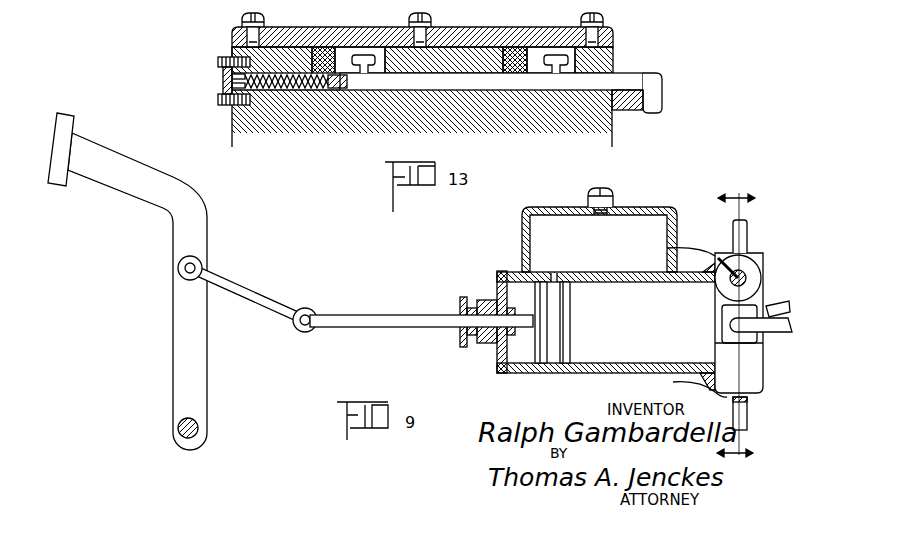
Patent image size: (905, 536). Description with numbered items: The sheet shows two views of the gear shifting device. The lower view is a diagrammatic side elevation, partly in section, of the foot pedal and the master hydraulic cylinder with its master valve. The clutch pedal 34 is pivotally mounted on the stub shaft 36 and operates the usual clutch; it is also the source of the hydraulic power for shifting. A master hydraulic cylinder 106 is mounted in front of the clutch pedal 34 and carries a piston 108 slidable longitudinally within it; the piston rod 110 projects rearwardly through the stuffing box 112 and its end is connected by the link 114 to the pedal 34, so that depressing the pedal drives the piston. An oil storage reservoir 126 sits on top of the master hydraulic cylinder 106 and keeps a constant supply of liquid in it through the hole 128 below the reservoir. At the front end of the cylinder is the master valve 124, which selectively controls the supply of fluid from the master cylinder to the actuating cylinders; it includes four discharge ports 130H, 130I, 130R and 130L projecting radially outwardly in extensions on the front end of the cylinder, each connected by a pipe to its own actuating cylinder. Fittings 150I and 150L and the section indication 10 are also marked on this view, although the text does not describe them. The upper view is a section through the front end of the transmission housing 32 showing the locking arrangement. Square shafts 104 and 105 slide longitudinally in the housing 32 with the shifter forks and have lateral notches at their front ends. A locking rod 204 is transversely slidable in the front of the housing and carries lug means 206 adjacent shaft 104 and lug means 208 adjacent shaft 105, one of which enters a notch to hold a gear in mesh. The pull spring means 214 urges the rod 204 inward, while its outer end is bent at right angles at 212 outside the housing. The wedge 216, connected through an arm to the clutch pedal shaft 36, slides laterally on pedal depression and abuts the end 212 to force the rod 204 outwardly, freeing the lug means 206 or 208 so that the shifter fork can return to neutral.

In FIG. 13, the housing 32 is at (593, 70).
In FIG. 13, the square shaft 104 is at (328, 57).
In FIG. 13, the square shaft 105 is at (515, 50).
In FIG. 13, the locking rod 204 is at (457, 80).
In FIG. 13, the lug means 206 is at (367, 60).
In FIG. 13, the lug means 208 is at (563, 63).
In FIG. 13, the bent end 212 is at (652, 98).
In FIG. 13, the pull spring means 214 is at (300, 88).
In FIG. 13, the wedge 216 is at (622, 108).
In FIG. 9, the clutch pedal 34 is at (192, 358).
In FIG. 9, the stub shaft 36 is at (197, 430).
In FIG. 9, the link 114 is at (243, 293).
In FIG. 9, the piston rod 110 is at (375, 323).
In FIG. 9, the stuffing box 112 is at (475, 343).
In FIG. 9, the master hydraulic cylinder 106 is at (610, 355).
In FIG. 9, the piston 108 is at (555, 343).
In FIG. 9, the hole 128 is at (555, 272).
In FIG. 9, the master valve 124 is at (747, 355).
In FIG. 9, the oil storage reservoir 126 is at (718, 258).
In FIG. 9, the discharge port 130I is at (735, 242).
In FIG. 9, the discharge port 130H is at (773, 307).
In FIG. 9, the discharge port 130R is at (793, 323).
In FIG. 9, the discharge port 130L is at (737, 413).
In FIG. 9, the upper fitting 150I is at (668, 245).
In FIG. 9, the lower fitting 150L is at (680, 385).
In FIG. 9, the section line 10 is at (736, 326).